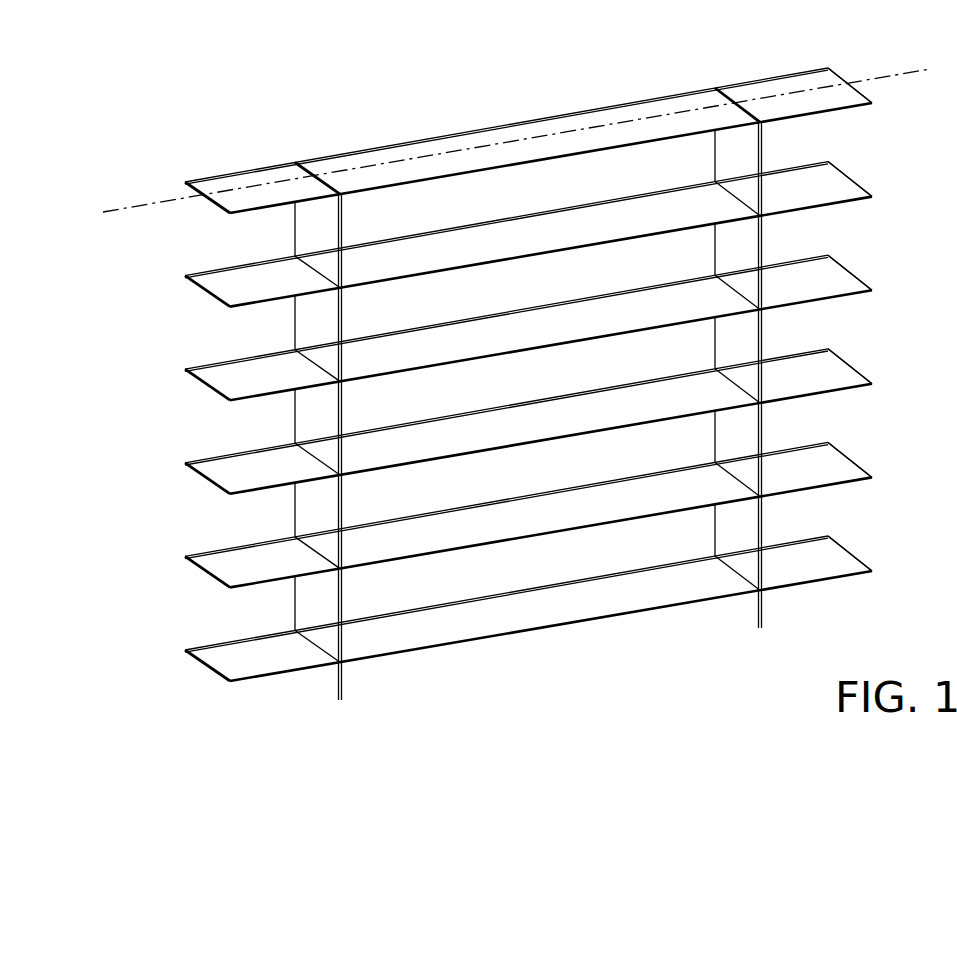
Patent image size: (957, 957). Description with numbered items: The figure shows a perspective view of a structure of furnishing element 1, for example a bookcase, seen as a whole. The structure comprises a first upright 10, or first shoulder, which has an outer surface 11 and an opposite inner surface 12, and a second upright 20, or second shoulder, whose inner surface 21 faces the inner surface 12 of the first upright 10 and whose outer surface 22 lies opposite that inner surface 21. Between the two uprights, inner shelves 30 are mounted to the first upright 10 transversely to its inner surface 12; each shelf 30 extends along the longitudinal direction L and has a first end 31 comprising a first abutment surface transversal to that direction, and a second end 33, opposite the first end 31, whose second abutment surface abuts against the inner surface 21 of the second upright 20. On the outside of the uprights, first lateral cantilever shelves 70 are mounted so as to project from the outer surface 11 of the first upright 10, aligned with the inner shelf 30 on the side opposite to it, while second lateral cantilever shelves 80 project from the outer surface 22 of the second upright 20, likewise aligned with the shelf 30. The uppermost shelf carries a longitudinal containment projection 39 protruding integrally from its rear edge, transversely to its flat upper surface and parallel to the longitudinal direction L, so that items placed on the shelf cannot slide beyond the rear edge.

The structure of furnishing element 1 is at (368, 102).
The first upright 10 is at (243, 460).
The outer surface 11 is at (323, 678).
The inner surface 12 is at (344, 673).
The second upright 20 is at (797, 387).
The inner surface 21 is at (750, 605).
The outer surface 22 is at (767, 607).
The inner shelf 30 is at (546, 110).
The first end 31 is at (316, 173).
The second end 33 is at (702, 96).
The longitudinal containment projection 39 is at (435, 134).
The first lateral cantilever shelf 70 is at (240, 173).
The second lateral cantilever shelf 80 is at (788, 84).
The longitudinal direction L is at (160, 197).